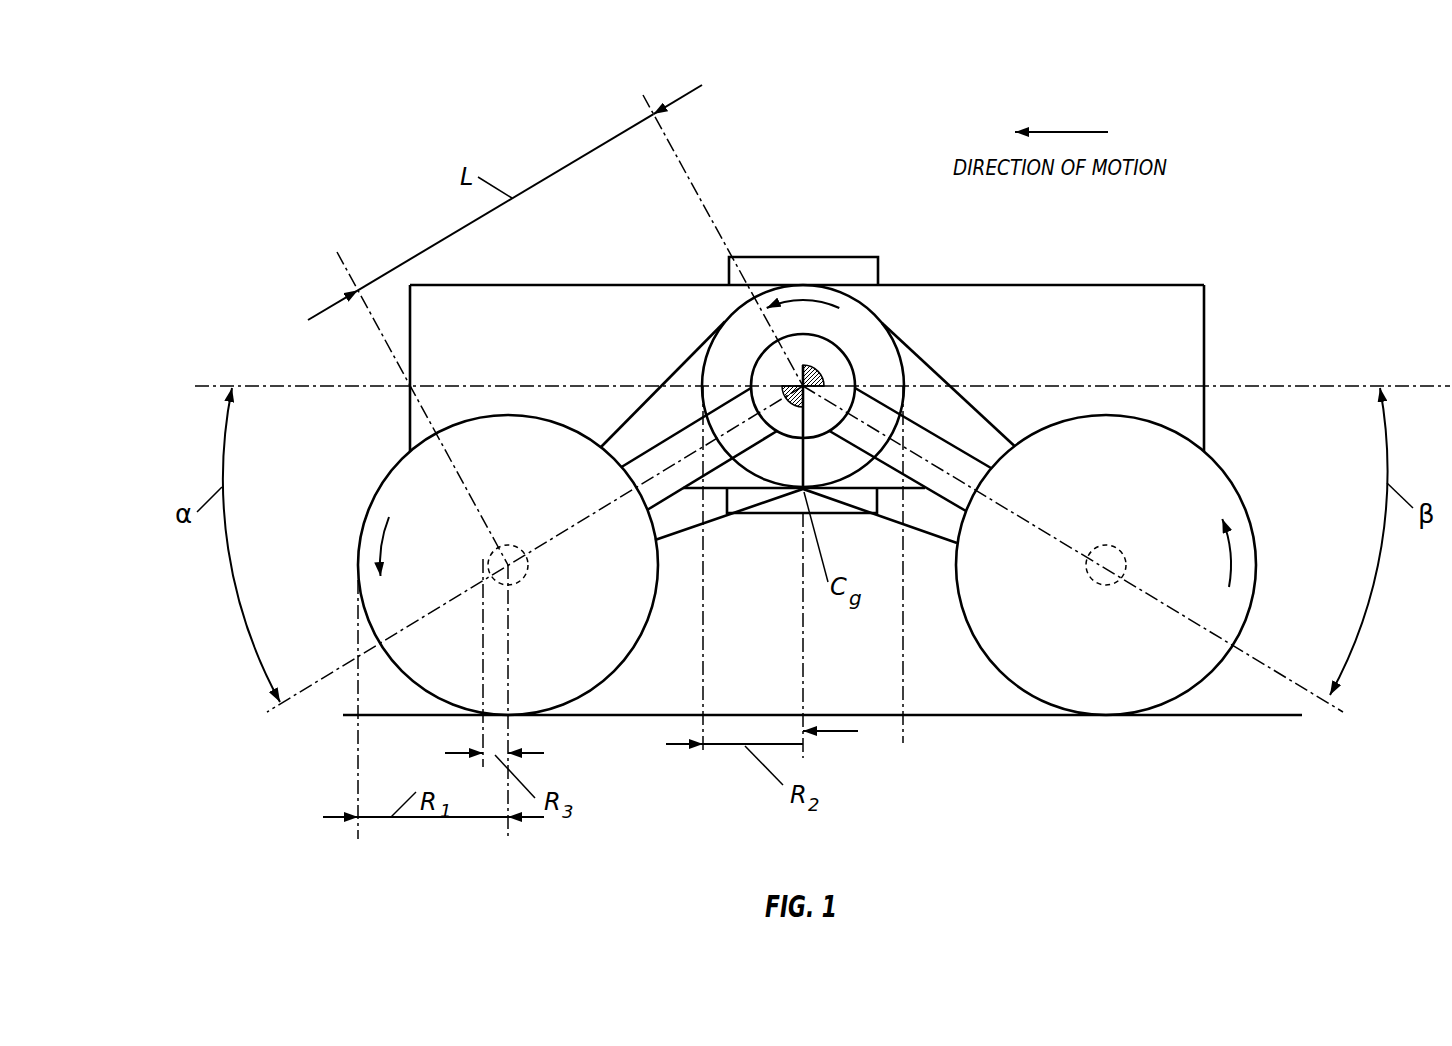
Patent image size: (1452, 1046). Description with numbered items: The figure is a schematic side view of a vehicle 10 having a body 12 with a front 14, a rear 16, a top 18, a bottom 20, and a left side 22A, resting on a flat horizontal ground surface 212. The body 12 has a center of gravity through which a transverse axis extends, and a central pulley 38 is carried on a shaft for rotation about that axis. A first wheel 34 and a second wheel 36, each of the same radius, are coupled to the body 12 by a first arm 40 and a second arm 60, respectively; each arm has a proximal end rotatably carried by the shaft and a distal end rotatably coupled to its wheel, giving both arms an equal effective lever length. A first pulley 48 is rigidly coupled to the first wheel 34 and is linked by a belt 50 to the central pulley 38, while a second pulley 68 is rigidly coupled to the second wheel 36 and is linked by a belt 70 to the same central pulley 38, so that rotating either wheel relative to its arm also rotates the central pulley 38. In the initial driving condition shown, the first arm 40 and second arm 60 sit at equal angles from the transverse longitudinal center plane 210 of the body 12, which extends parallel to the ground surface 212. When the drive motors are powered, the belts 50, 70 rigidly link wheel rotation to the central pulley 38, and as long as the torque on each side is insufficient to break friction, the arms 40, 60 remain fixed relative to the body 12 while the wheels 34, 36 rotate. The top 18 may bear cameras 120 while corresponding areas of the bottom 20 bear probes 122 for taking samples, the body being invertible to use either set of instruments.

The vehicle 10 is at (357, 205).
The body 12 is at (425, 432).
The front 14 is at (410, 410).
The rear 16 is at (1207, 328).
The top 18 is at (607, 285).
The bottom 20 is at (706, 512).
The left side 22A is at (1160, 341).
The first wheel 34 is at (365, 536).
The second wheel 36 is at (1213, 475).
The central pulley 38 is at (743, 330).
The first arm 40 is at (680, 473).
The first pulley 48 is at (485, 557).
The belt 50 is at (698, 343).
The second arm 60 is at (947, 470).
The second pulley 68 is at (1117, 542).
The belt 70 is at (925, 360).
The cameras 120 is at (820, 273).
The probes 122 is at (822, 515).
The transverse longitudinal center plane 210 is at (1232, 386).
The ground surface 212 is at (689, 715).